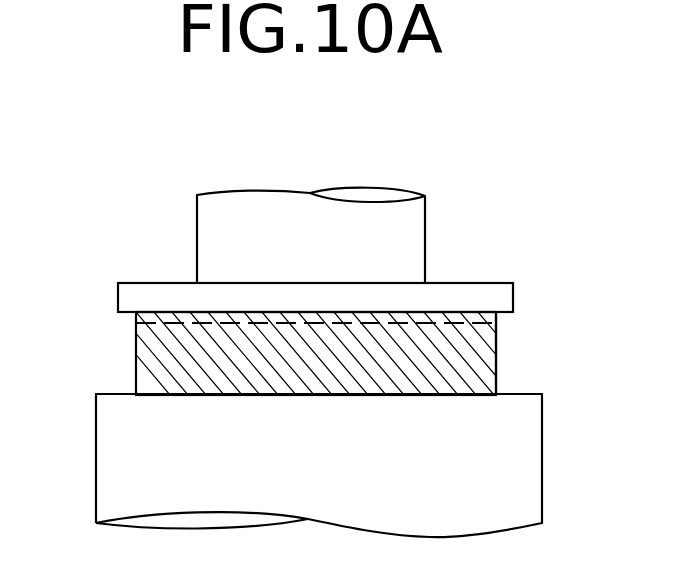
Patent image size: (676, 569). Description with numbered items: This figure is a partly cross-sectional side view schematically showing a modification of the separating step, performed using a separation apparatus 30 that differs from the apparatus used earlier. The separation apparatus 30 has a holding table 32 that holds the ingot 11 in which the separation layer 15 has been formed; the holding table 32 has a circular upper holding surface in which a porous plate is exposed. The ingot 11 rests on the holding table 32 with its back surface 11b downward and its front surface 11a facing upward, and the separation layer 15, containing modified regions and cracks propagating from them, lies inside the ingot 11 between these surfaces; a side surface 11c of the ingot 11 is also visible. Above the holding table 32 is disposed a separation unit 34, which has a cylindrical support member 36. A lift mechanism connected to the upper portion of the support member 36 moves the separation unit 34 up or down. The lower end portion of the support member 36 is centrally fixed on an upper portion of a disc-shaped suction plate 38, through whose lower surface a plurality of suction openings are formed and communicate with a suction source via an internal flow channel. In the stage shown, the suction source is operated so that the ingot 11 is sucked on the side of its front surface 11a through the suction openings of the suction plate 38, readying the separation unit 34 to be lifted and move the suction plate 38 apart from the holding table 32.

The separation apparatus 30 is at (167, 193).
The separation unit 34 is at (583, 195).
The support member 36 is at (417, 231).
The suction plate 38 is at (497, 296).
The ingot 11 is at (128, 347).
The front surface 11a is at (158, 312).
The back surface 11b is at (400, 395).
The side surface of bonding layer 11c is at (498, 371).
The separation layer 15 is at (253, 325).
The holding table 32 is at (528, 485).